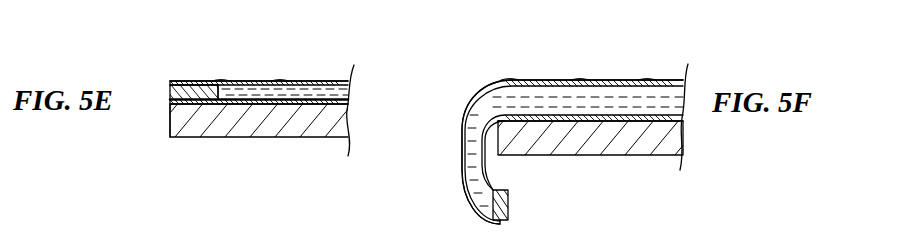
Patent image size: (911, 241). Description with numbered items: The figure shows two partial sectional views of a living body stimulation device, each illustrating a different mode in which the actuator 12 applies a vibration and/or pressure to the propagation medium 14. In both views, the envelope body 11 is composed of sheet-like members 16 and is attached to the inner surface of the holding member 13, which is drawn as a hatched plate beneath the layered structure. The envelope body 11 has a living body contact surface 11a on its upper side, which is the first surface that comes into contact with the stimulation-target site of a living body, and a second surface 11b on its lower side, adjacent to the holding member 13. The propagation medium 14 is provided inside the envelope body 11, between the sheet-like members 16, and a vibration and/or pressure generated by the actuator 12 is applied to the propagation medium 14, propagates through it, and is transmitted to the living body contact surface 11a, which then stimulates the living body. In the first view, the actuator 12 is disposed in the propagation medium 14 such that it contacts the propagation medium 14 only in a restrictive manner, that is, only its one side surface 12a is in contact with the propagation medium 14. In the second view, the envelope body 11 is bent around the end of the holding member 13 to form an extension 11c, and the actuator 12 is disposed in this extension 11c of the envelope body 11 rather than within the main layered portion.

In FIG. 5E, the envelope body 11 is at (298, 80).
In FIG. 5F, the envelope body 11 is at (631, 80).
In FIG. 5E, the living body contact surface 11a is at (338, 82).
In FIG. 5F, the living body contact surface 11a is at (603, 82).
In FIG. 5E, the second surface 11b is at (257, 103).
In FIG. 5F, the second surface 11b is at (532, 122).
In FIG. 5F, the extension 11c is at (461, 168).
In FIG. 5E, the actuator 12 is at (205, 92).
In FIG. 5F, the actuator 12 is at (508, 205).
In FIG. 5E, the one side surface 12a is at (220, 86).
In FIG. 5E, the holding member 13 is at (241, 128).
In FIG. 5F, the holding member 13 is at (635, 144).
In FIG. 5E, the propagation medium 14 is at (315, 97).
In FIG. 5F, the propagation medium 14 is at (658, 101).
In FIG. 5E, the sheet-like members 16 is at (256, 82).
In FIG. 5F, the sheet-like members 16 is at (550, 82).